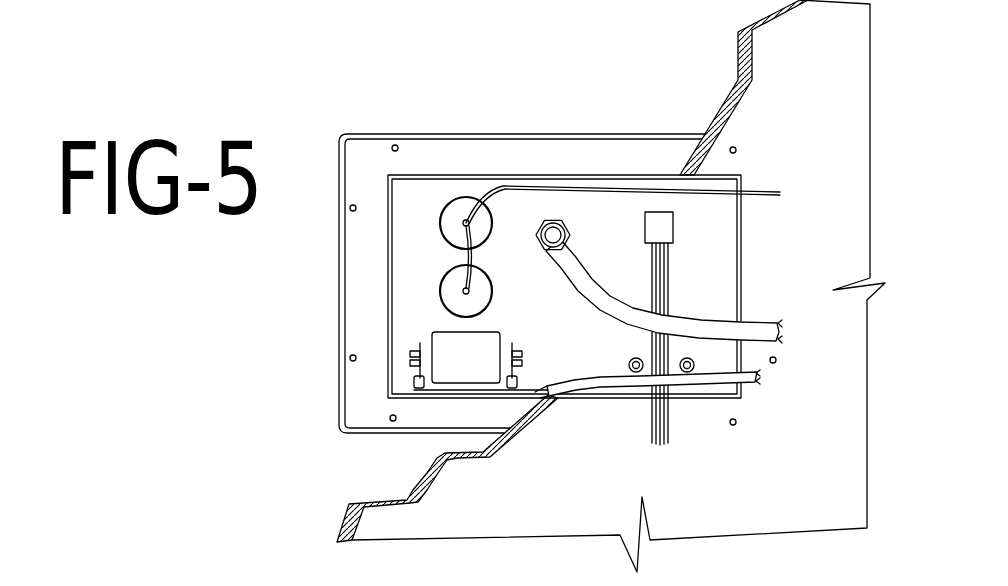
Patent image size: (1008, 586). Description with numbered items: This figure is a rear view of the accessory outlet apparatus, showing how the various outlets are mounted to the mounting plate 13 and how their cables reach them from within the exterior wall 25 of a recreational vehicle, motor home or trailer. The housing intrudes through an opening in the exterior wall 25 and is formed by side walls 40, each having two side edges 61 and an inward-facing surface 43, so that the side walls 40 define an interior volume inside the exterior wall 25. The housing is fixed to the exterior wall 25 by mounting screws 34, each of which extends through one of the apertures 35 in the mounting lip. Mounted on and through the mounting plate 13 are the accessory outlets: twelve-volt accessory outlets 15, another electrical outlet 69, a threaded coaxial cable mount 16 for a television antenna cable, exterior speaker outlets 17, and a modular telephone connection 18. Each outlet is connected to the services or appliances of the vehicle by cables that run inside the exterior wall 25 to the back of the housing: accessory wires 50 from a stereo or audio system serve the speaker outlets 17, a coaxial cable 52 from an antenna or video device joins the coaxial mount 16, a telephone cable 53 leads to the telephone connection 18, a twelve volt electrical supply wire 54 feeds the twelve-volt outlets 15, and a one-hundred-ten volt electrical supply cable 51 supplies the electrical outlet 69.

The mounting plate 13 is at (551, 218).
The twelve-volt accessory outlet 15 is at (483, 222).
The threaded coaxial cable mount 16 is at (563, 221).
The exterior speaker outlet 17 is at (637, 358).
The modular telephone connection 18 is at (666, 226).
The exterior wall 25 is at (850, 188).
The mounting screw 34 is at (556, 286).
The aperture 35 is at (399, 151).
The side wall 40 is at (549, 291).
The inward-facing surface 43 is at (392, 278).
The accessory wires 50 is at (728, 403).
The 110 volt electrical supply cable 51 is at (503, 282).
The coaxial cable 52 is at (753, 332).
The telephone cable 53 is at (668, 272).
The twelve volt electrical supply wire 54 is at (606, 180).
The side edge 61 is at (387, 173).
The electrical outlet 69 is at (488, 345).